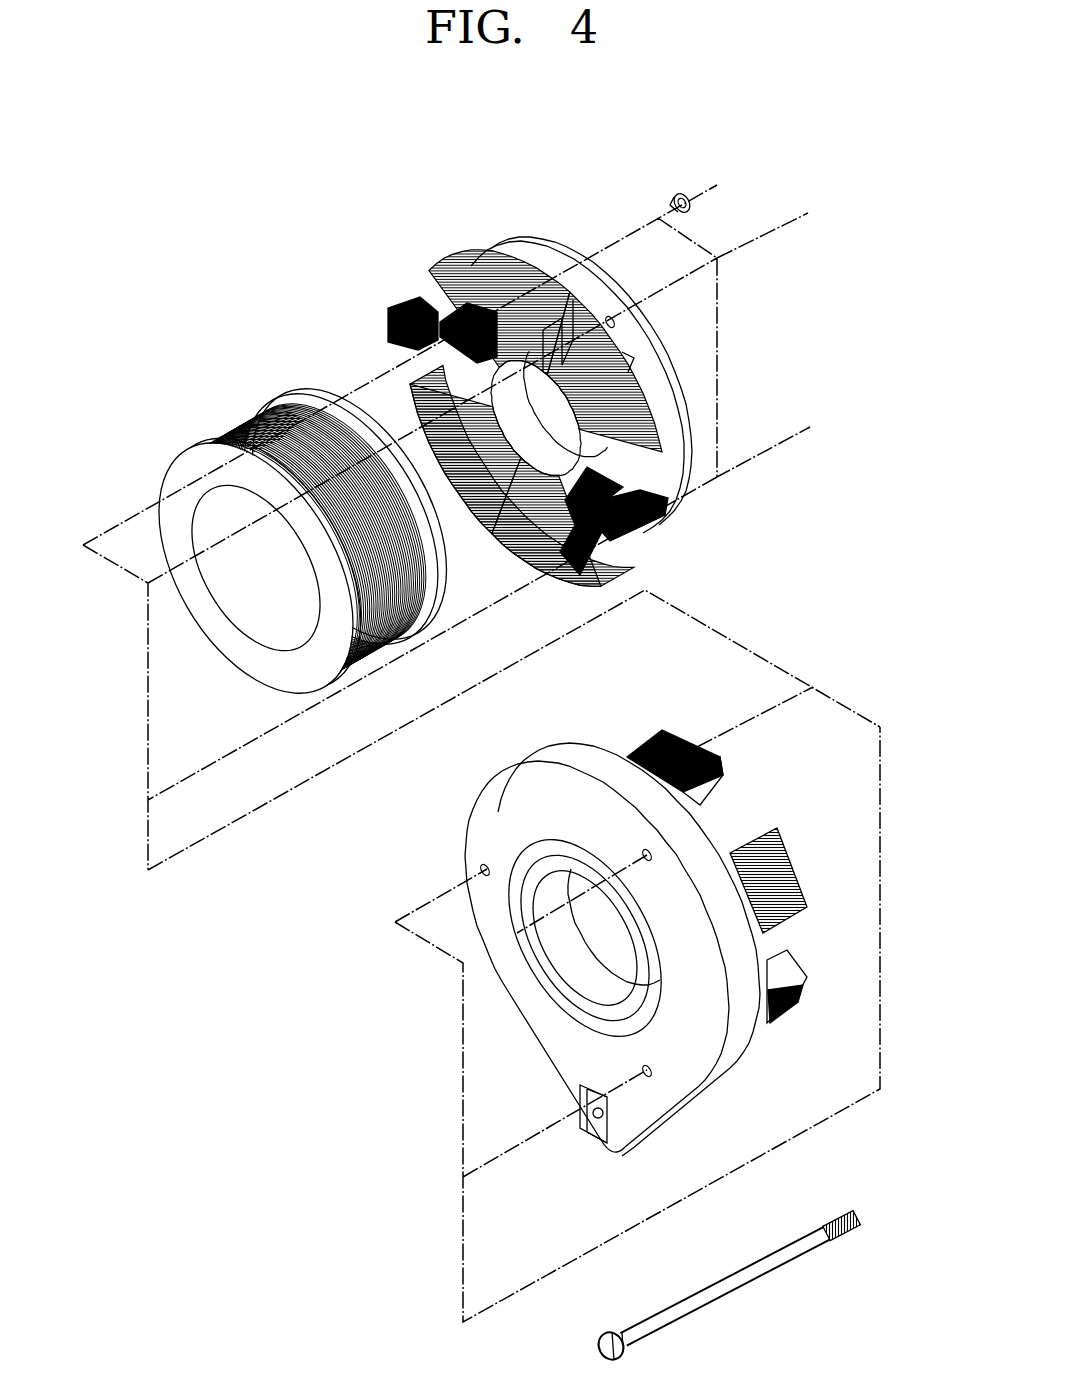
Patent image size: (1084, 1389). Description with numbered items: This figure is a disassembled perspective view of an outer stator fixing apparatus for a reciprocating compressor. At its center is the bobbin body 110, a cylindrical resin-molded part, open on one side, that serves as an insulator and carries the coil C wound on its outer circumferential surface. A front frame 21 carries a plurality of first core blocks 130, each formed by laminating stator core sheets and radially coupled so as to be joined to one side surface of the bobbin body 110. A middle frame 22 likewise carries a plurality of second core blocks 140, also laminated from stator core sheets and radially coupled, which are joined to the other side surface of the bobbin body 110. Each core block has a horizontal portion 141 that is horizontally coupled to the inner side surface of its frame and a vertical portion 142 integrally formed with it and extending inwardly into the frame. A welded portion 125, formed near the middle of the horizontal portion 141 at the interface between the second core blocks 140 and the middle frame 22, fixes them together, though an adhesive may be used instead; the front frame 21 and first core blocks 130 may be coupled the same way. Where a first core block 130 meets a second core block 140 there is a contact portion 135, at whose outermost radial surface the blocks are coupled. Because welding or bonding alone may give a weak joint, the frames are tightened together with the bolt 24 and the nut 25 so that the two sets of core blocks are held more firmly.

The bobbin body 110 is at (303, 541).
The coil C is at (243, 436).
The contact portion 135 is at (410, 318).
The second core block 140 is at (478, 272).
The middle frame 22 is at (498, 240).
The vertical portion 142 is at (544, 330).
The horizontal portion 141 is at (573, 338).
The welded portion 125 is at (628, 356).
The nut 25 is at (678, 196).
The front frame 21 is at (487, 800).
The first core block 130 is at (797, 967).
The bolt 24 is at (745, 1280).